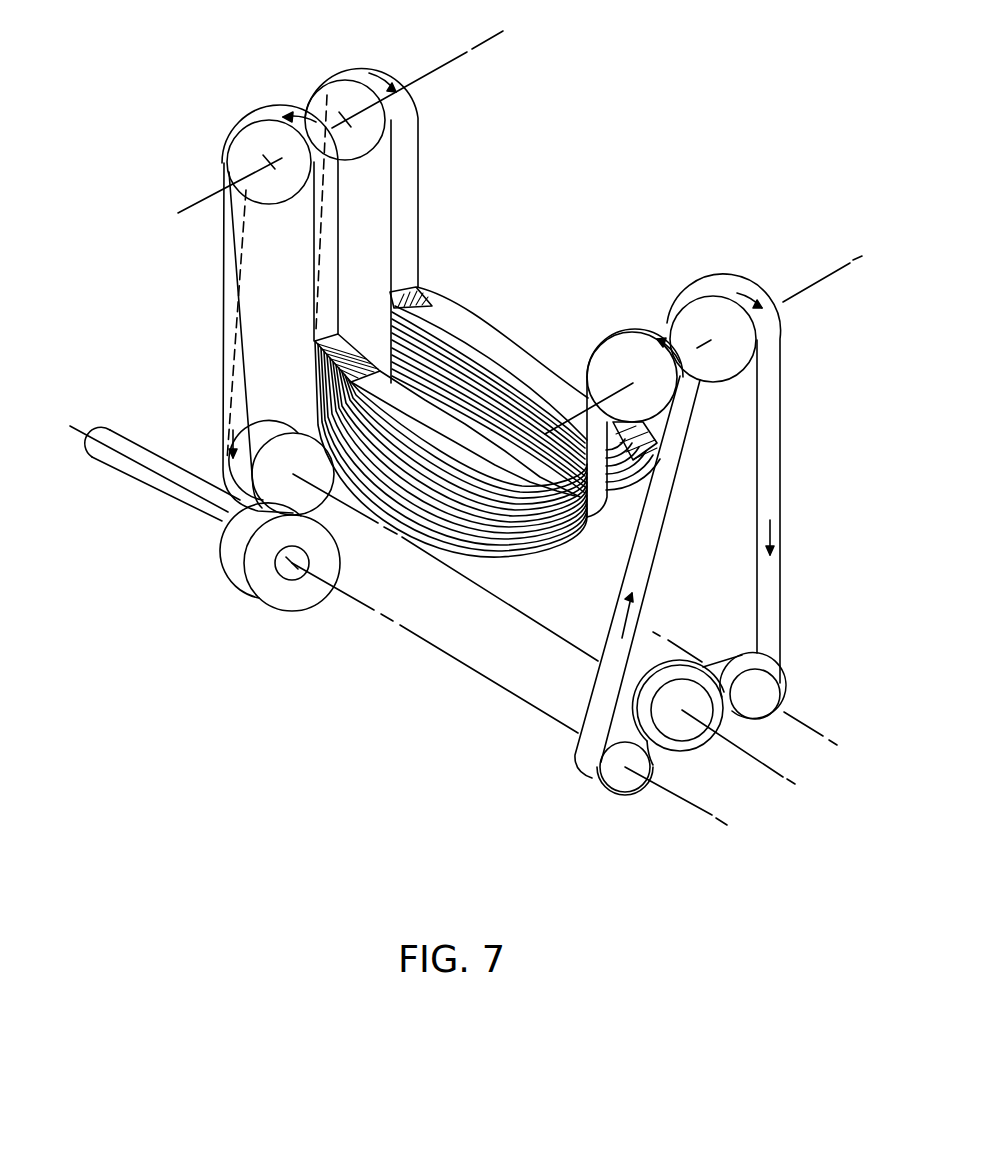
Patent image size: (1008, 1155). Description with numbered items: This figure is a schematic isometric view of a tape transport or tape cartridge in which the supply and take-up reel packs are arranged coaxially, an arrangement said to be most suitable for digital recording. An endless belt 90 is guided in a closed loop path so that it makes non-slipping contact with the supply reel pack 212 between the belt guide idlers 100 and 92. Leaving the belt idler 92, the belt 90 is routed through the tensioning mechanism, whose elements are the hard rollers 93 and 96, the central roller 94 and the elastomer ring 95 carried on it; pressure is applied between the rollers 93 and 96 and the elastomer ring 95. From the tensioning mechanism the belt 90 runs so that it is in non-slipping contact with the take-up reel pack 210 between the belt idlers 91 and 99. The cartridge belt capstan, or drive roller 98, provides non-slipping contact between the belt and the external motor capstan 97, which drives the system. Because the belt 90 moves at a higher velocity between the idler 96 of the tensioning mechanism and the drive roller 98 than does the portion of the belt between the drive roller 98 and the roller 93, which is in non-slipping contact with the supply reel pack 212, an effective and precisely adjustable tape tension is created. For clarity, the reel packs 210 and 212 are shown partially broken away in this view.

The endless belt 90 is at (415, 200).
The belt idler 91 is at (630, 350).
The belt guide idler 92 is at (702, 315).
The hard roller 93 is at (765, 685).
The central roller 94 is at (678, 725).
The elastomer ring 95 is at (717, 720).
The hard roller 96 is at (623, 777).
The external motor capstan 97 is at (300, 600).
The drive roller 98 is at (270, 485).
The belt idler 99 is at (250, 143).
The belt guide idler 100 is at (345, 95).
The take-up reel pack 210 is at (466, 558).
The supply reel pack 212 is at (452, 301).